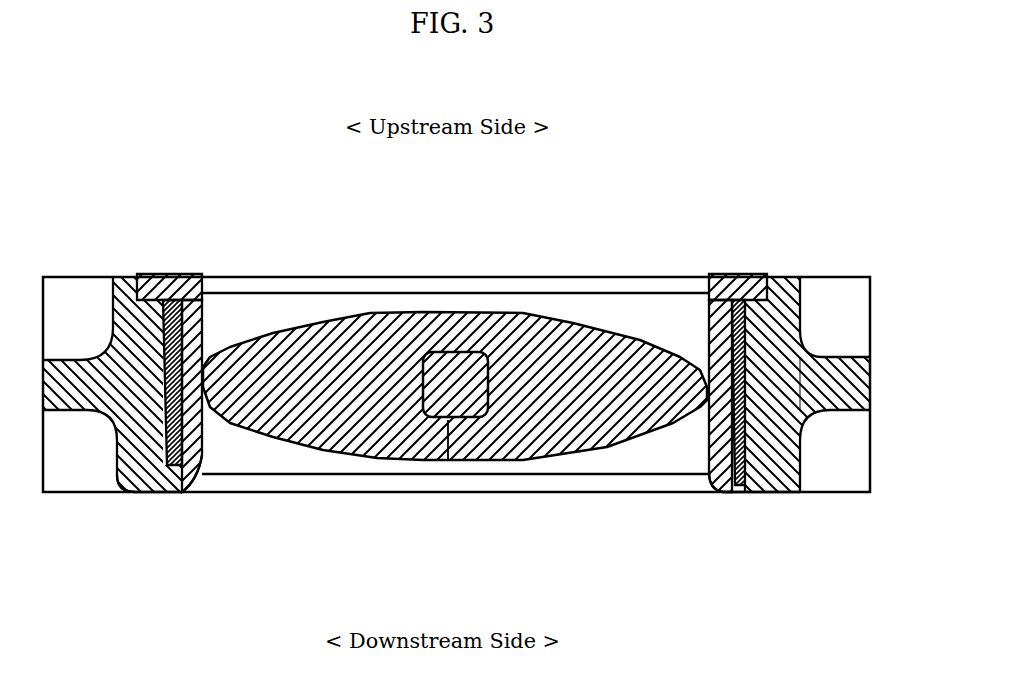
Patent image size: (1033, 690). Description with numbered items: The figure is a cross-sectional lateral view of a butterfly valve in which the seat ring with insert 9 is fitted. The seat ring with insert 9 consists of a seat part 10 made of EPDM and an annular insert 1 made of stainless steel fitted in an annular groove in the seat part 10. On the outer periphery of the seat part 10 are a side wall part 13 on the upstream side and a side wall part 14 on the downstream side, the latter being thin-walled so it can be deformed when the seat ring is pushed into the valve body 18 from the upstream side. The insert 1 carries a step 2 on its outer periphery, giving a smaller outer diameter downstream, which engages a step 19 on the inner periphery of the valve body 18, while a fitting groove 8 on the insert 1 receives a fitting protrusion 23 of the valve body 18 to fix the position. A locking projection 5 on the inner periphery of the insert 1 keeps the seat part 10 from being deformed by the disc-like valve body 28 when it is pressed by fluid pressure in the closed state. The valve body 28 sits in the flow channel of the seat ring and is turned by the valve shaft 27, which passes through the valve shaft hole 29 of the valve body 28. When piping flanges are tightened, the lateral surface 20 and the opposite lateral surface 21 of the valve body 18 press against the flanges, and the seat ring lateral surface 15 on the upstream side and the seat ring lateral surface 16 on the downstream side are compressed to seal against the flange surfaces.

The insert 1 is at (748, 338).
The step 2 is at (205, 367).
The locking projection 5 is at (713, 493).
The fitting groove 8 is at (203, 305).
The seat ring with insert 9 is at (203, 440).
The seat part 10 is at (705, 362).
The side wall part on the upstream side 13 is at (763, 275).
The side wall part on the downstream side 14 is at (757, 495).
The seat ring lateral surface on the upstream side 15 is at (738, 275).
The seat ring lateral surface on the downstream side 16 is at (752, 494).
The valve body 18 is at (113, 303).
The step 19 is at (118, 493).
The lateral surface 20 is at (137, 300).
The lateral surface 21 is at (133, 493).
The fitting protrusion 23 is at (753, 370).
The valve shaft 27 is at (460, 418).
The valve body 28 is at (498, 330).
The valve shaft hole 29 is at (448, 420).